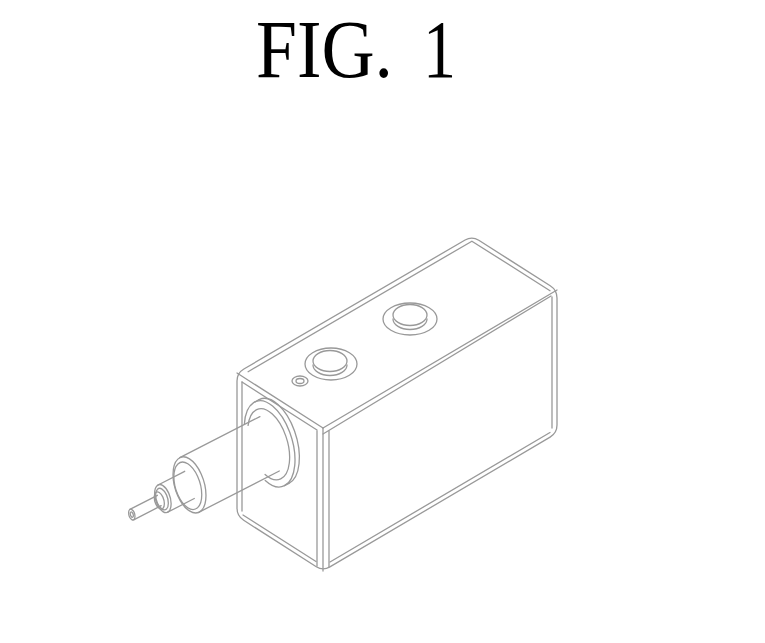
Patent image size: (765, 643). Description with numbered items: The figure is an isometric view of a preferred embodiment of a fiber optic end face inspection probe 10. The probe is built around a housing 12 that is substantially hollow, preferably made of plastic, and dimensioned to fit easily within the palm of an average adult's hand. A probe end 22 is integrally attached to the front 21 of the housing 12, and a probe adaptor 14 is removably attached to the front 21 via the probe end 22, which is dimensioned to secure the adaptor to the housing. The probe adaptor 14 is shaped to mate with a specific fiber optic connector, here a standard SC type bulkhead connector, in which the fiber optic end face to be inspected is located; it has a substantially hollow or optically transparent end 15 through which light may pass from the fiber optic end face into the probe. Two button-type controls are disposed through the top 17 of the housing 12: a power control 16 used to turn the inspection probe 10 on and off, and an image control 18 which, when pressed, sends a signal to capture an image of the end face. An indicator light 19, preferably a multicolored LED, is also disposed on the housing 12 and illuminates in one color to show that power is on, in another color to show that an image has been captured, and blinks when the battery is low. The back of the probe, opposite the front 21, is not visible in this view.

The fiber optic end face inspection probe 10 is at (271, 239).
The housing 12 is at (483, 469).
The probe adaptor 14 is at (150, 497).
The end 15 is at (133, 516).
The power control 16 is at (404, 308).
The top 17 is at (495, 283).
The image control 18 is at (322, 364).
The indicator light 19 is at (296, 381).
The front 21 is at (289, 518).
The probe end 22 is at (216, 452).